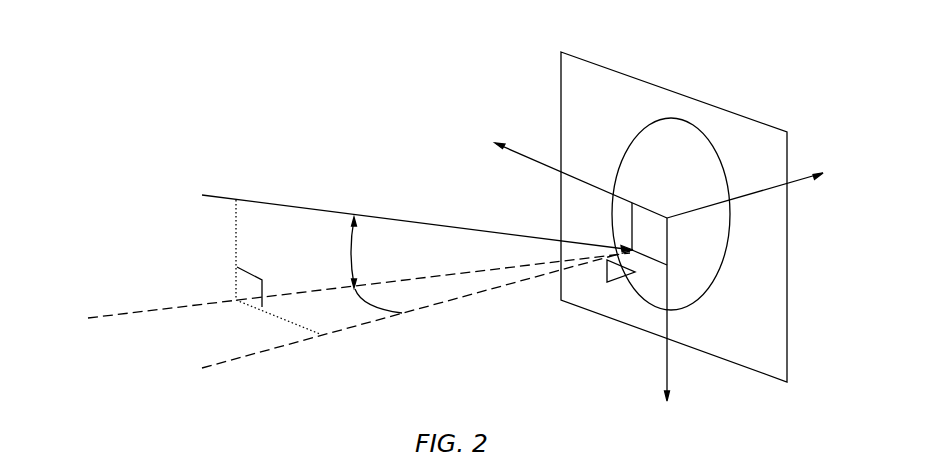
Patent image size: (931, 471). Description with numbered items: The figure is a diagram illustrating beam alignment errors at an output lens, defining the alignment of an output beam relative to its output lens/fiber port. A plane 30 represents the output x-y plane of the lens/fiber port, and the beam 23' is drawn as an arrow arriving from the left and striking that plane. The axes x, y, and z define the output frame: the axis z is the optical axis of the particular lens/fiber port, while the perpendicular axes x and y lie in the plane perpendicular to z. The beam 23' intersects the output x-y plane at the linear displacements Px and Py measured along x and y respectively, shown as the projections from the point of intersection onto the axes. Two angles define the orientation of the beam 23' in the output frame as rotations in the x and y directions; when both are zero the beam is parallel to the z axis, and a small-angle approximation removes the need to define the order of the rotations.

The detection plane / imaging surface 30 is at (652, 82).
The incident light ray 23' is at (417, 214).
The x axis x is at (676, 312).
The y axis y is at (581, 175).
The z axis z is at (745, 195).
The linear displacement in x Px is at (652, 267).
The linear displacement in y Py is at (638, 212).